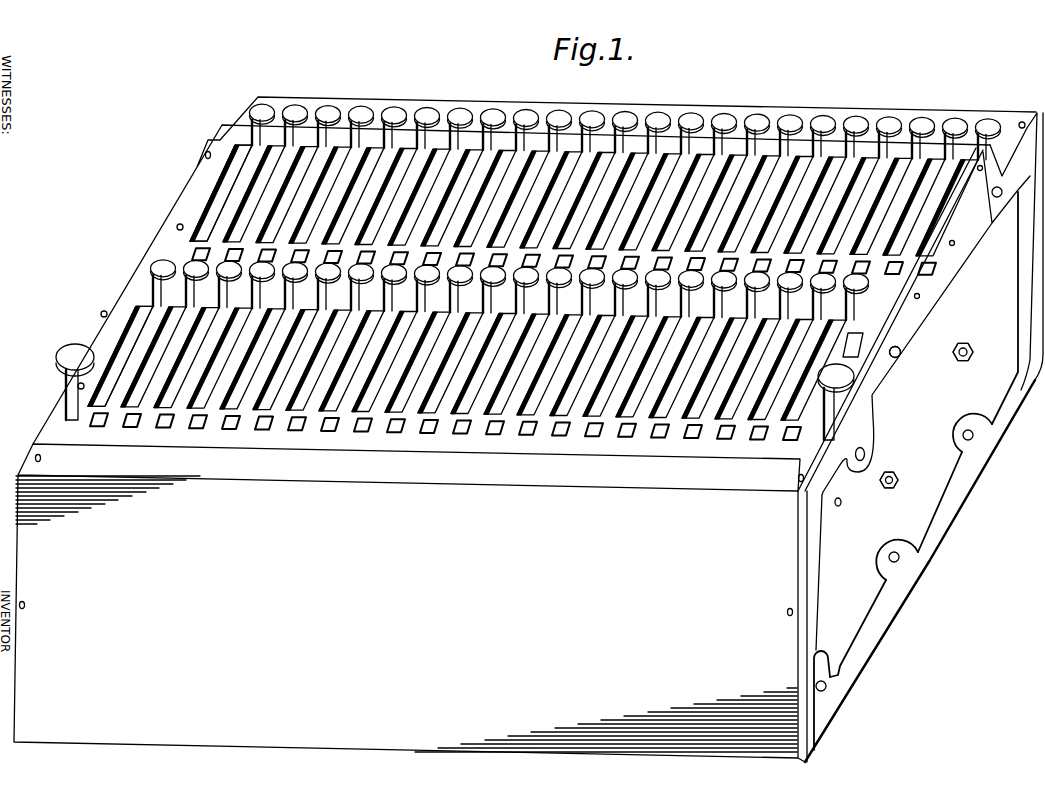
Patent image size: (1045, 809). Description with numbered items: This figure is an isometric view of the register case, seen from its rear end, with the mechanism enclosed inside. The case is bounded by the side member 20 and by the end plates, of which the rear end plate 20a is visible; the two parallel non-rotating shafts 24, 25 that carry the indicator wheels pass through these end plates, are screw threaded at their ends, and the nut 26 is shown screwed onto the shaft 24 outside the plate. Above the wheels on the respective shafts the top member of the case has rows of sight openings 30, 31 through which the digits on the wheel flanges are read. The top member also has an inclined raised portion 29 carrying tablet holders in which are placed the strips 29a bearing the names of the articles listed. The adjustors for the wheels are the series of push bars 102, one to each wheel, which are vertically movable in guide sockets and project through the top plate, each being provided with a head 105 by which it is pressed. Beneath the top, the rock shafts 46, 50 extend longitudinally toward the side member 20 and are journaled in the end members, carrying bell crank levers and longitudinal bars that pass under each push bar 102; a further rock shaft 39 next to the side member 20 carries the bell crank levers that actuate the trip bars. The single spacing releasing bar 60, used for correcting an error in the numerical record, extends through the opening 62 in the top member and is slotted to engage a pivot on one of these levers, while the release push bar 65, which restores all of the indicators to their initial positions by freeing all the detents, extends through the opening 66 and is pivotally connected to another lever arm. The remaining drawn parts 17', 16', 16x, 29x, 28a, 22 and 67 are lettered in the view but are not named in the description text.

The side member 20 is at (409, 603).
The end plate 20a is at (912, 512).
The rear comb plate 17' is at (534, 270).
The side plate 16' is at (920, 437).
The hole in side plate 16x is at (901, 354).
The head 105 is at (993, 124).
The push bar 102 is at (978, 131).
The inclined raised portion 29 is at (208, 198).
The strip 29a is at (198, 214).
The end key lever 29x is at (134, 312).
The end key lever 28a is at (236, 148).
The sight opening 31 is at (190, 251).
The sight opening 30 is at (83, 413).
The screw holes 22 is at (1001, 189).
The non-rotating shaft 25 is at (968, 343).
The nut 26 is at (966, 362).
The non-rotating shaft 24 is at (887, 491).
The single spacing releasing bar 60 is at (841, 378).
The opening 62 is at (827, 440).
The lever key top 67 is at (73, 354).
The release push bar 65 is at (64, 392).
The opening 66 is at (66, 419).
The rock shaft 50 is at (974, 441).
The rock shaft 46 is at (899, 560).
The rock shaft 39 is at (826, 687).